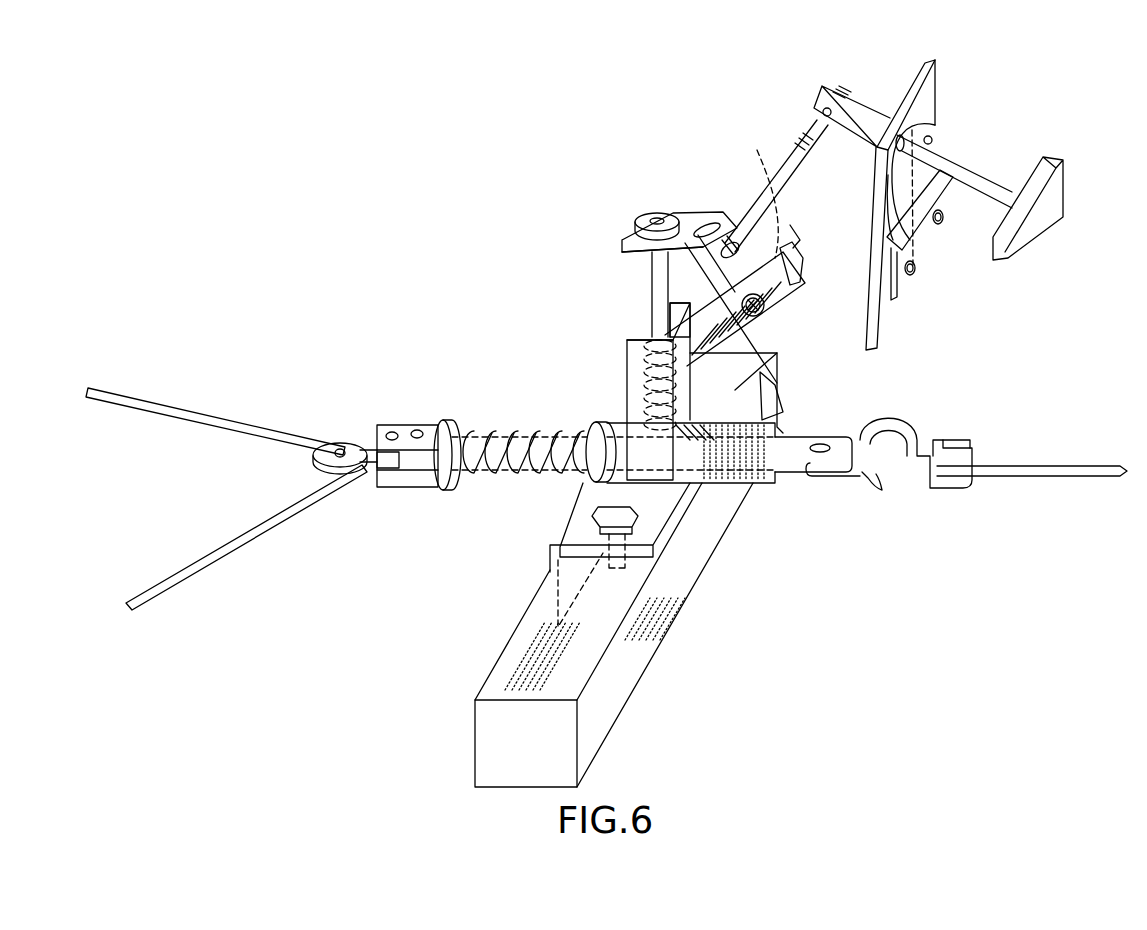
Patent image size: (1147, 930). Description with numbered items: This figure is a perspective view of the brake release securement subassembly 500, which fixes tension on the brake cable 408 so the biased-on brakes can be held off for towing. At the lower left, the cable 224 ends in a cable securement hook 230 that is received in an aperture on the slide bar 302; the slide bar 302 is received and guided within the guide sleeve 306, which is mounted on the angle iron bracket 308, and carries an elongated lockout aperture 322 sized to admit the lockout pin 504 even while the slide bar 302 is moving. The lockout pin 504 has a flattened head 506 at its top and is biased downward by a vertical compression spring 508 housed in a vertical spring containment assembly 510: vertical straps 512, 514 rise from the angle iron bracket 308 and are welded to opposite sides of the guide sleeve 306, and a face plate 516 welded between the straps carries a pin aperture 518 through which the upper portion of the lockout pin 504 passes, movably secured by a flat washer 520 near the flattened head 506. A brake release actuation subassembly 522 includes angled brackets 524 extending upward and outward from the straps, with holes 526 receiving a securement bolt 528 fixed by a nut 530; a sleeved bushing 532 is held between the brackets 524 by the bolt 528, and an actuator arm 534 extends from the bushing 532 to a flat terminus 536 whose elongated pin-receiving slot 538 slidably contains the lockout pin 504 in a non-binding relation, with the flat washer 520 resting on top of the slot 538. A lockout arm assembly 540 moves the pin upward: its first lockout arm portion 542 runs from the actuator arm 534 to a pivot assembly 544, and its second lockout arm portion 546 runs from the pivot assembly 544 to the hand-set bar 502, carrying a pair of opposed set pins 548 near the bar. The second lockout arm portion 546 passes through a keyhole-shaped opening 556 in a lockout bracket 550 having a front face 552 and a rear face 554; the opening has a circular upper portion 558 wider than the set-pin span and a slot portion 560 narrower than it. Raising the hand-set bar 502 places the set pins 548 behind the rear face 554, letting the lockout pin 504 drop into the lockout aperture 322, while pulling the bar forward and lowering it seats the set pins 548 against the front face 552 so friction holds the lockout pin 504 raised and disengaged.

The cable 224 is at (1047, 463).
The cable securement hook 230 is at (913, 425).
The slide bar 302 is at (812, 432).
The guide sleeve 306 is at (767, 483).
The angle iron bracket 308 is at (572, 517).
The lockout aperture 322 is at (705, 452).
The brake cable 408 is at (212, 412).
The brake release securement subassembly 500 is at (916, 192).
The hand-set bar 502 is at (1055, 172).
The lockout pin 504 is at (653, 300).
The flattened head 506 is at (624, 261).
The vertical compression spring 508 is at (645, 360).
The vertical spring containment assembly 510 is at (670, 468).
The vertical strap 512 is at (603, 360).
The vertical strap 514 is at (679, 307).
The face plate 516 is at (640, 338).
The pin aperture 518 is at (645, 325).
The flat washer 520 is at (650, 212).
The brake release actuation subassembly 522 is at (766, 327).
The angled brackets 524 is at (792, 284).
The holes 526 is at (765, 320).
The securement bolt 528 is at (767, 325).
The nut 530 is at (770, 308).
The sleeved bushing 532 is at (762, 189).
The actuator arm 534 is at (722, 236).
The flat terminus 536 is at (622, 252).
The pin-receiving slot 538 is at (698, 226).
The lockout arm assembly 540 is at (863, 113).
The first lockout arm portion 542 is at (778, 204).
The pivot assembly 544 is at (768, 174).
The second lockout arm portion 546 is at (876, 103).
The opposed set pins 548 is at (947, 143).
The lockout bracket 550 is at (893, 240).
The front face 552 is at (927, 92).
The rear face 554 is at (866, 174).
The keyhole-shaped opening 556 is at (907, 185).
The circular upper portion 558 is at (928, 136).
The slot portion 560 is at (905, 222).